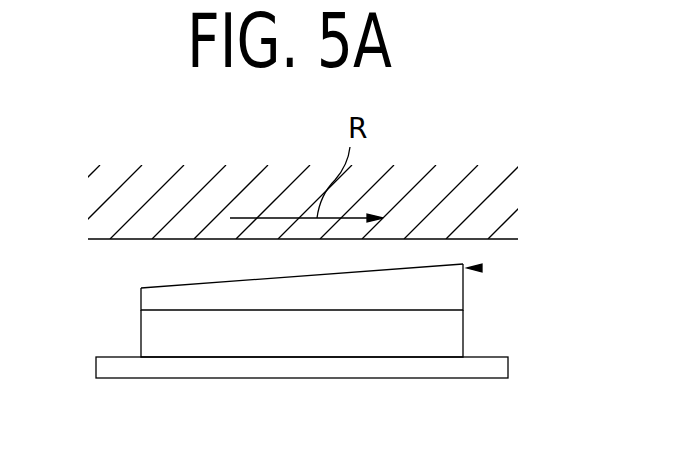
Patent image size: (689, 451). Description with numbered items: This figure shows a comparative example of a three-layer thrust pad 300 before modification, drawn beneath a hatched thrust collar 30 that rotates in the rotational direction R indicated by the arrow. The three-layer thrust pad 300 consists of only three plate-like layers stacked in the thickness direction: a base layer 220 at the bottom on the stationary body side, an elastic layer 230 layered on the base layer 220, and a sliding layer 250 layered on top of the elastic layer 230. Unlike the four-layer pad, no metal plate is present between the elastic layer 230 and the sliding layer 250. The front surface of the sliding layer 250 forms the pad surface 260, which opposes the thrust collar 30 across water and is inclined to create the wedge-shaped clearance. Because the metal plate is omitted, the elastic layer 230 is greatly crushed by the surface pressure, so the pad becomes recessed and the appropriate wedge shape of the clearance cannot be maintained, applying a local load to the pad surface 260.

The thrust collar 30 is at (437, 193).
The base layer 220 is at (459, 367).
The elastic layer 230 is at (450, 330).
The sliding layer 250 is at (445, 287).
The pad surface 260 is at (167, 286).
The three-layer thrust pad 300 is at (482, 268).